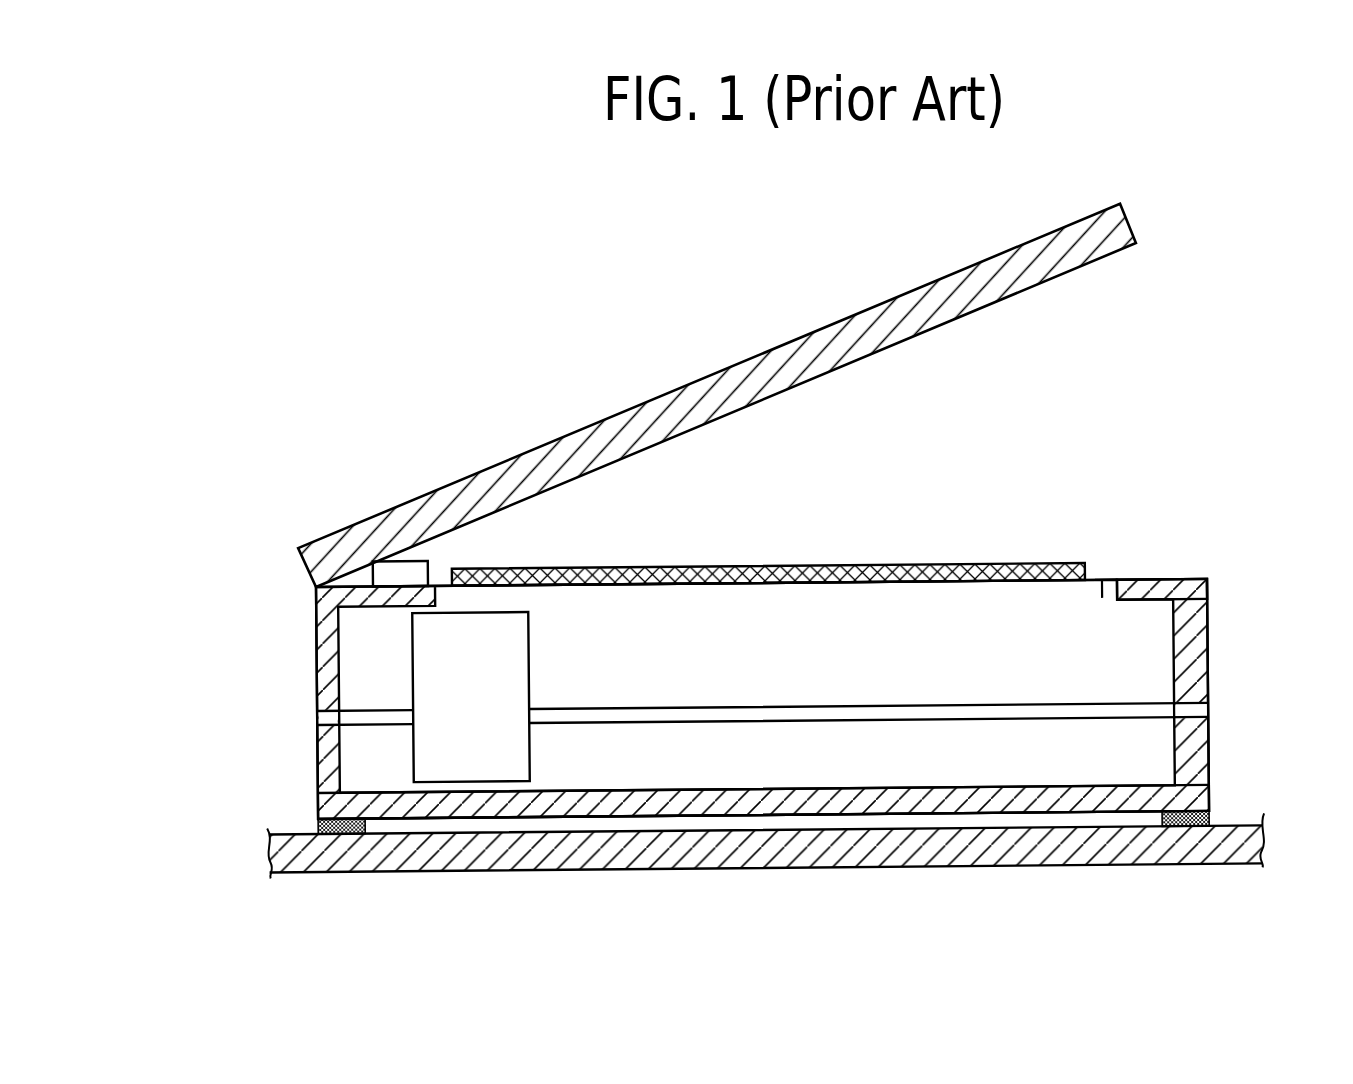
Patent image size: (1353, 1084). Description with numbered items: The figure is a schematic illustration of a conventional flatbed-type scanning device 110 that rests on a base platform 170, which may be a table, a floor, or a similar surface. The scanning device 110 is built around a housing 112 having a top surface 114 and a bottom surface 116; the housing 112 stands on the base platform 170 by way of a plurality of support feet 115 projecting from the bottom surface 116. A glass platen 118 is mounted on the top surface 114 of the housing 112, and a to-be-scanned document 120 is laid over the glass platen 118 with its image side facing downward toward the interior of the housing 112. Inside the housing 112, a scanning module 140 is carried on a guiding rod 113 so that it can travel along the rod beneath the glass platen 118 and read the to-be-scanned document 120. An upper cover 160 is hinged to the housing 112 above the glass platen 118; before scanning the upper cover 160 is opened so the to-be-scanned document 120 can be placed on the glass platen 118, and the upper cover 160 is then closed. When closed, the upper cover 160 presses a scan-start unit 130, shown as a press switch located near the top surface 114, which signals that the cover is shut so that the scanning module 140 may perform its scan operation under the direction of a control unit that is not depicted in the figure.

The scanning device 110 is at (216, 612).
The housing 112 is at (1193, 637).
The guiding rod 113 is at (702, 712).
The top surface 114 is at (1153, 580).
The support feet 115 is at (1208, 808).
The bottom surface 116 is at (698, 820).
The glass platen 118 is at (1102, 582).
The to-be-scanned document 120 is at (735, 567).
The scan-start unit 130 is at (400, 572).
The scanning module 140 is at (515, 658).
The upper cover 160 is at (622, 438).
The base platform 170 is at (267, 862).